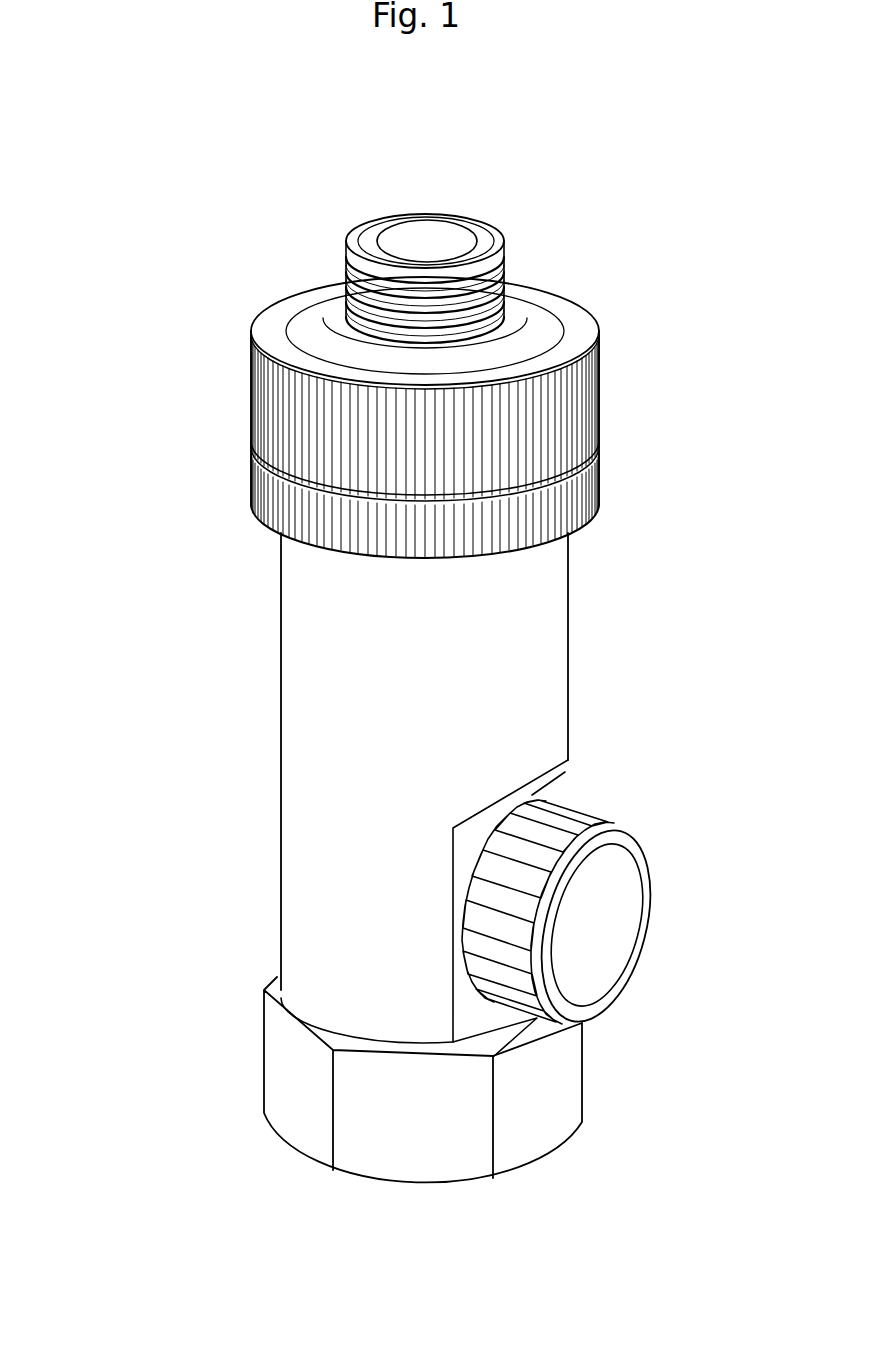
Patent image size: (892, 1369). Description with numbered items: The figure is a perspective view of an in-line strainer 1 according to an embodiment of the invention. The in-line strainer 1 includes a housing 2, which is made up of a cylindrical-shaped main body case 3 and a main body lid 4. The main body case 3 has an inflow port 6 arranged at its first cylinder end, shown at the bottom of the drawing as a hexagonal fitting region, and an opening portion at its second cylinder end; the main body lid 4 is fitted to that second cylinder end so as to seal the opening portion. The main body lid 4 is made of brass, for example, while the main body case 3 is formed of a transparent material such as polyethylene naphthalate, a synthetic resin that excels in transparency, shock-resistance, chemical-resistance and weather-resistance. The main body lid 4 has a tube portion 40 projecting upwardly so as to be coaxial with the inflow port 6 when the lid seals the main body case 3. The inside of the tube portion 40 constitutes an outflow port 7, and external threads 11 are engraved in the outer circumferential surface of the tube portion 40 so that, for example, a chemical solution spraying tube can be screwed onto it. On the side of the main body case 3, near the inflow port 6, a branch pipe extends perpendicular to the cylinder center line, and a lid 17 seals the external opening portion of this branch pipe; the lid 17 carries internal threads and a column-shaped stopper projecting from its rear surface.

The in-line strainer 1 is at (647, 245).
The housing 2 is at (131, 303).
The main body case 3 is at (277, 547).
The main body lid 4 is at (248, 345).
The inflow port 6 is at (413, 1193).
The outflow port 7 is at (427, 240).
The external threads 11 is at (500, 263).
The lid 17 is at (652, 850).
The tube portion 40 is at (373, 237).